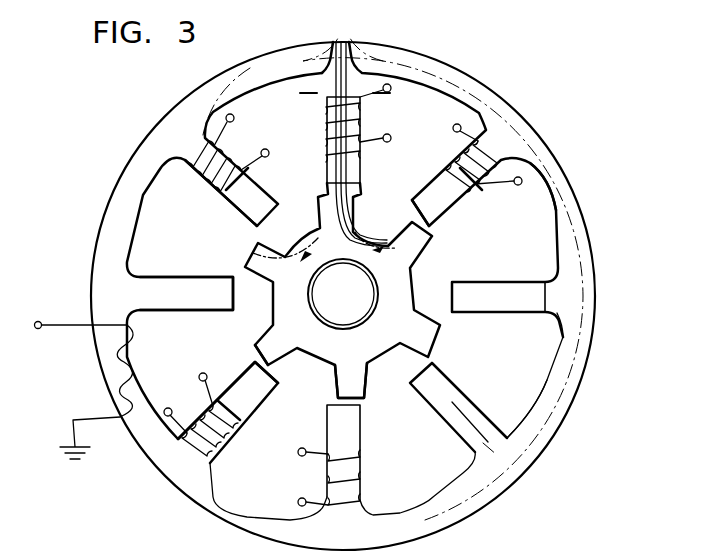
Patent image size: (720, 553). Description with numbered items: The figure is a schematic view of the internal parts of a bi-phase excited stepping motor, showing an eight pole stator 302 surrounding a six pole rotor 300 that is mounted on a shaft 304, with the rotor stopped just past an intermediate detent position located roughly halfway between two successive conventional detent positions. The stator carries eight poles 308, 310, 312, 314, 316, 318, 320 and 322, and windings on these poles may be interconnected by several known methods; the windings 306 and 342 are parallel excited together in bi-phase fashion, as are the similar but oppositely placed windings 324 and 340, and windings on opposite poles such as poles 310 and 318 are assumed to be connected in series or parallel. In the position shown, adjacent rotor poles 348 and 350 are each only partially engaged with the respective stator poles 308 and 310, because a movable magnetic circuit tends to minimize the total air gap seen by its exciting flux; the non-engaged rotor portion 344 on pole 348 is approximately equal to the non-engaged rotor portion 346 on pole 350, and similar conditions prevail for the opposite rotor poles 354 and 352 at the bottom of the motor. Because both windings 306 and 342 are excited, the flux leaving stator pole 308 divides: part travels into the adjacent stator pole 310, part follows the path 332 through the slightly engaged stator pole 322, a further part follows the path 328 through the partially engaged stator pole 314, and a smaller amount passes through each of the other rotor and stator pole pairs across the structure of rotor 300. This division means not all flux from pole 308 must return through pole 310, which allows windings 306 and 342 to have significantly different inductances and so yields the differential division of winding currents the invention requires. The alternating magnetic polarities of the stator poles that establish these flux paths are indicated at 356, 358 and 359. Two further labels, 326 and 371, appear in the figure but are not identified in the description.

The rotor 300 is at (270, 303).
The stator 302 is at (120, 218).
The shaft 304 is at (325, 306).
The winding 306 is at (316, 100).
The stator pole 308 is at (370, 112).
The stator pole 310 is at (414, 200).
The stator pole 312 is at (470, 315).
The stator pole 314 is at (447, 368).
The stator pole 316 is at (322, 410).
The stator pole 318 is at (200, 373).
The stator pole 320 is at (220, 277).
The stator pole 322 is at (222, 202).
The winding 324 is at (355, 480).
The flux path right 326 is at (408, 226).
The flux path 328 is at (377, 348).
The flux path 332 is at (317, 238).
The winding 340 is at (248, 428).
The winding 342 is at (392, 136).
The non-engaged rotor portion 344 is at (318, 140).
The non-engaged rotor portion 346 is at (440, 232).
The rotor pole 348 is at (318, 188).
The rotor pole 350 is at (430, 258).
The rotor pole 352 is at (361, 424).
The rotor pole 354 is at (258, 337).
The magnetic polarity indication 356 is at (352, 158).
The magnetic polarity indication 358 is at (468, 226).
The magnetic polarity indication 359 is at (483, 296).
The sensing coil 371 is at (97, 366).